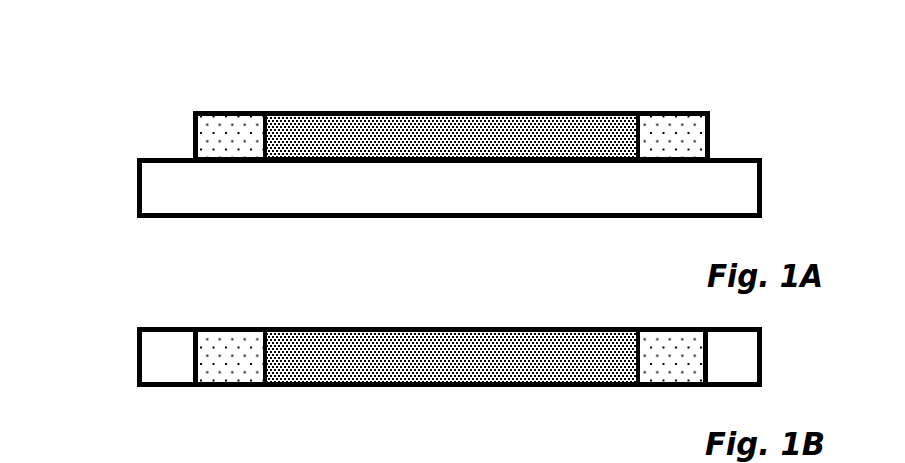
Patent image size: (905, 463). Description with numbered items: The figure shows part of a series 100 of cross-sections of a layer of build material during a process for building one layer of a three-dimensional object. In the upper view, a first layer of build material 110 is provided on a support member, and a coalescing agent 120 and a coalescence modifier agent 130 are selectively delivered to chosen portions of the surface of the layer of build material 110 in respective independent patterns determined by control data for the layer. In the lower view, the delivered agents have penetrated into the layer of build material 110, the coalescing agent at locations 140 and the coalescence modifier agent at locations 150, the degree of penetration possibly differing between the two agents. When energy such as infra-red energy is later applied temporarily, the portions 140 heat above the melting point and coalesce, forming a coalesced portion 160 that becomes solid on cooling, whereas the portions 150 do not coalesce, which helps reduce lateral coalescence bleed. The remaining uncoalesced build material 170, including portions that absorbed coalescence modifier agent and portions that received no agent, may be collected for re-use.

In FIG. 1A, the series of cross-sections 100 is at (172, 52).
In FIG. 1A, the layer of build material 110 is at (137, 191).
In FIG. 1B, the layer of build material 110 is at (137, 355).
In FIG. 1A, the coalescing agent 120 is at (457, 112).
In FIG. 1A, the coalescence modifier agent 130 is at (673, 112).
In FIG. 1B, the locations of coalescing agent penetration 140 is at (457, 328).
In FIG. 1B, the locations of coalescence modifier agent penetration 150 is at (670, 328).
In FIG. 1B, the coalesced portion 160 is at (527, 462).
In FIG. 1B, the uncoalesced build material 170 is at (190, 459).